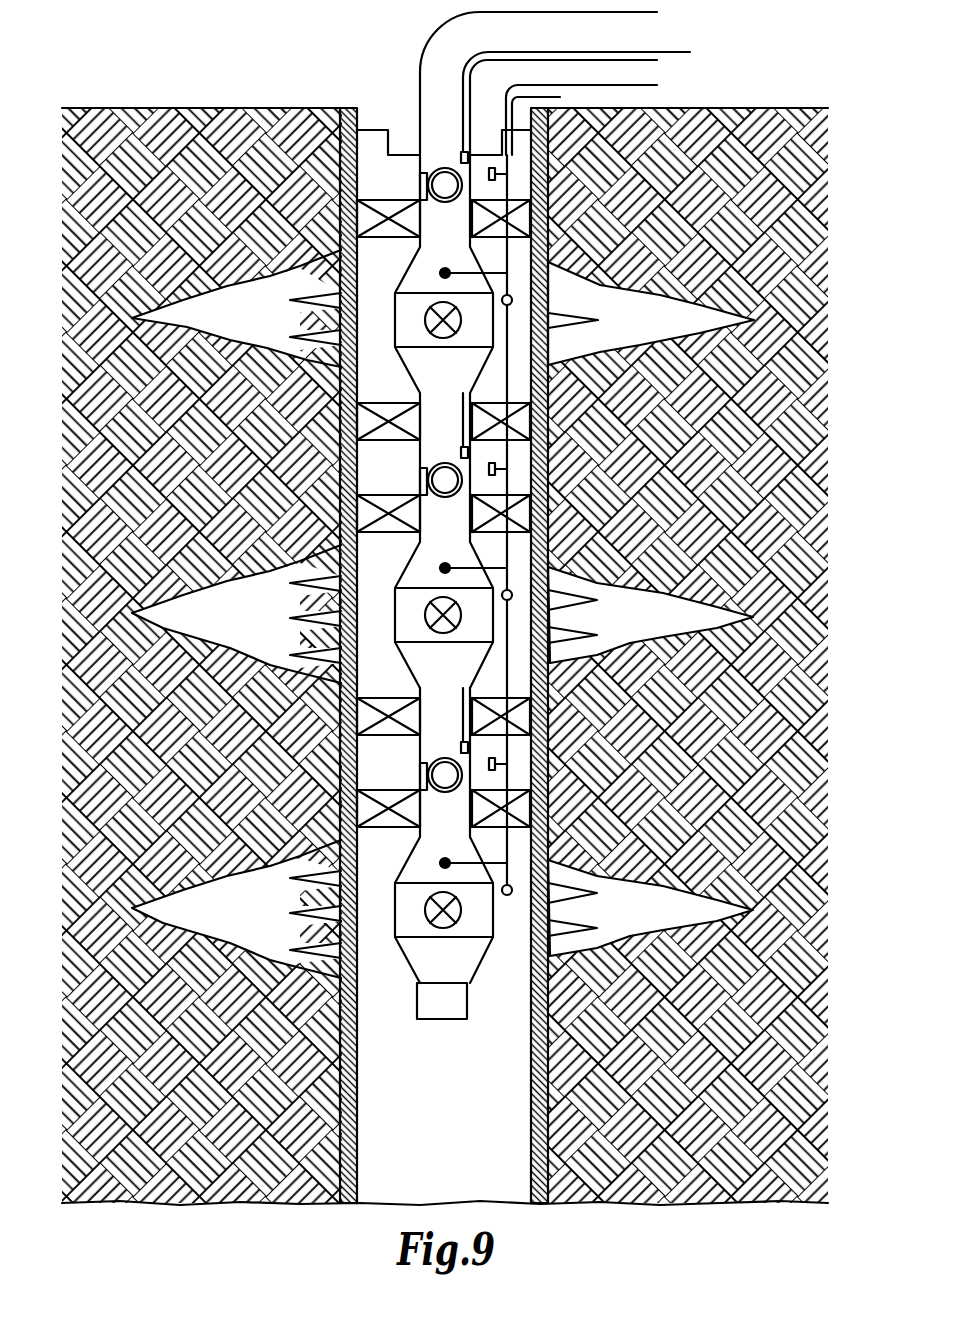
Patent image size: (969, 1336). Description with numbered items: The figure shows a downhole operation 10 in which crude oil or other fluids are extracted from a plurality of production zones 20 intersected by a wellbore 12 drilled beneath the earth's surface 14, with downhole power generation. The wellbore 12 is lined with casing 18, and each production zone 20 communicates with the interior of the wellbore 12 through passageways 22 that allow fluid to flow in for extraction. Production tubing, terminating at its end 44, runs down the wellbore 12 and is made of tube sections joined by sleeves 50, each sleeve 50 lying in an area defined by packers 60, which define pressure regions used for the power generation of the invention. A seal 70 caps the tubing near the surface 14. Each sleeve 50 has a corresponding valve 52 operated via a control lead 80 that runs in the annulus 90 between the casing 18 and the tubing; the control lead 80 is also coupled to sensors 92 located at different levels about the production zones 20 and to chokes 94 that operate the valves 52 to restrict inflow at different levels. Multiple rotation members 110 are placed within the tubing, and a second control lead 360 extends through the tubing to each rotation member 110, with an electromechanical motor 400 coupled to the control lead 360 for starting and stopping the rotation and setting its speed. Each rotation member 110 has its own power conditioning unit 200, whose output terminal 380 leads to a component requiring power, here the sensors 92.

The downhole operation 10 is at (668, 156).
The wellbore 12 is at (380, 95).
The earth's surface 14 is at (176, 106).
The casing 18 is at (552, 395).
The production zone 20 is at (678, 303).
The passageway 22 is at (580, 322).
The end 44 is at (452, 1003).
The sleeve 50 is at (441, 271).
The valve 52 is at (450, 331).
The packer 60 is at (372, 195).
The seal 70 is at (386, 142).
The control lead 80 is at (625, 86).
The annulus 90 is at (376, 380).
The sensor 92 is at (510, 297).
The choke 94 is at (420, 228).
The rotation member 110 is at (478, 207).
The power conditioning unit 200 is at (496, 174).
The control lead 360 is at (690, 53).
The output terminal 380 is at (470, 184).
The electromechanical motor 400 is at (469, 158).